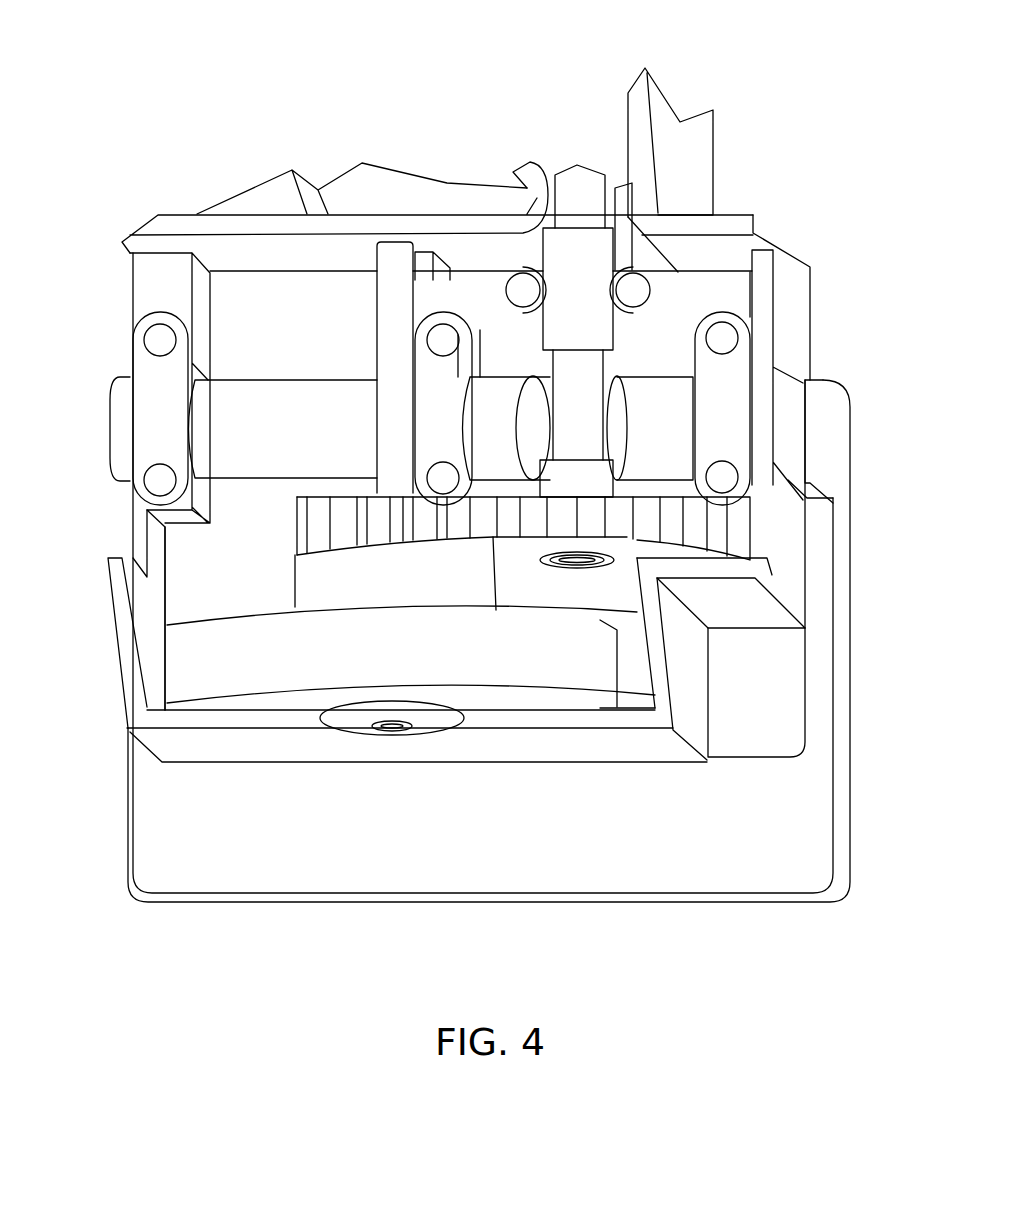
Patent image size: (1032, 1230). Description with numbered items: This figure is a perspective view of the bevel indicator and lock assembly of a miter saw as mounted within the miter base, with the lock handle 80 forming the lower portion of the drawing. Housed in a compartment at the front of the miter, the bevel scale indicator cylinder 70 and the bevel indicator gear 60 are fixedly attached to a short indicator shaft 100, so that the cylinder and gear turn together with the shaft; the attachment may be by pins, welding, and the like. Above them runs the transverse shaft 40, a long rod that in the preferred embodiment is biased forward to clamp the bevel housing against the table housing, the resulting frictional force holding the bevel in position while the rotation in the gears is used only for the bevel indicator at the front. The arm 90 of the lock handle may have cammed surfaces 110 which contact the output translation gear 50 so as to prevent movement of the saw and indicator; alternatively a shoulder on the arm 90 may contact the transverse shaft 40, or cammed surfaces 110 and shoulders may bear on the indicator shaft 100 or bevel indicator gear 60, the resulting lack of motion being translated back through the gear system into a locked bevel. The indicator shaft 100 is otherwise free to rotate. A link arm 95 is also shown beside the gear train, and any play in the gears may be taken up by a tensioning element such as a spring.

The transverse shaft 40 is at (592, 390).
The output translation gear 50 is at (757, 552).
The bevel indicator gear 60 is at (300, 557).
The bevel scale indicator cylinder 70 is at (207, 675).
The lock handle 80 is at (180, 833).
The arm 90 is at (247, 395).
The right link arm 95 is at (733, 427).
The indicator shaft 100 is at (400, 261).
The cammed surfaces 110 is at (525, 490).